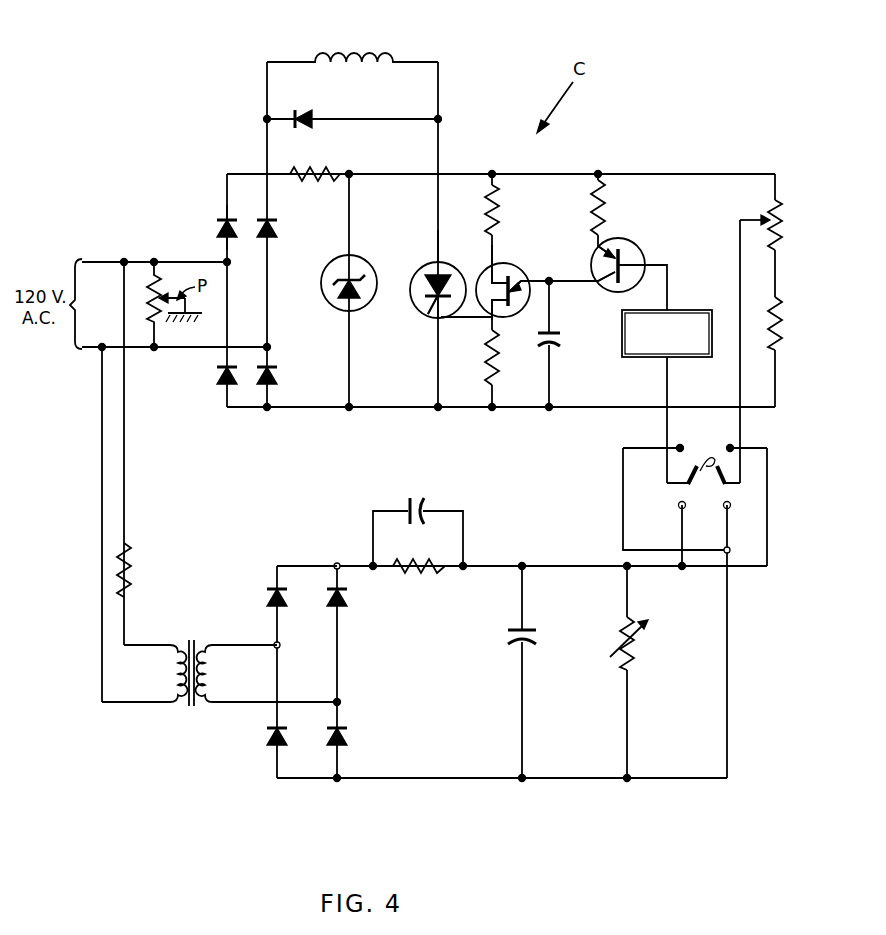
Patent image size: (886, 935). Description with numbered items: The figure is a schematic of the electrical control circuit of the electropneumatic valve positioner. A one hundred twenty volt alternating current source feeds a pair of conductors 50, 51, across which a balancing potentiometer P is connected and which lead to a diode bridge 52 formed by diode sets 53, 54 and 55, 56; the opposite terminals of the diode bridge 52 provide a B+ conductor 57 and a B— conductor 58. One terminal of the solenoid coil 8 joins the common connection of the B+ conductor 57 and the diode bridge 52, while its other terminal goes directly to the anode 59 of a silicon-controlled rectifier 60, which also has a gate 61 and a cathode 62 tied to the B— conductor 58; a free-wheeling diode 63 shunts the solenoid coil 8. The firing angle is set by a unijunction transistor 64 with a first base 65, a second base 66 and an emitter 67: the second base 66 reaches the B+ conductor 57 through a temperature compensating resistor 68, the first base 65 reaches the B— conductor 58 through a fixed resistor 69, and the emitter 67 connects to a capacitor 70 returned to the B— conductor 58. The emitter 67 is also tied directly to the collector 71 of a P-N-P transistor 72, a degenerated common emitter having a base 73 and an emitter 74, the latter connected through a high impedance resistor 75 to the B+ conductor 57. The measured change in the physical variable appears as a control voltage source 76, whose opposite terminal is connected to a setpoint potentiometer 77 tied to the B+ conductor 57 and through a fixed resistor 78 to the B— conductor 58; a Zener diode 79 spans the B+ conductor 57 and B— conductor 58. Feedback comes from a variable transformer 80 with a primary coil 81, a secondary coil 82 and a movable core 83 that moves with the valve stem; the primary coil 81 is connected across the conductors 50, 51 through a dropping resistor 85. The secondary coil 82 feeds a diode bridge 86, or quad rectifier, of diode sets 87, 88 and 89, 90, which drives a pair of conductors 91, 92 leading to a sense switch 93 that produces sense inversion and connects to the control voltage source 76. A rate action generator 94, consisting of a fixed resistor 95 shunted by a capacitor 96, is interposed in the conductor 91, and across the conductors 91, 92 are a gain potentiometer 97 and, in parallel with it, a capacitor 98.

The solenoid coil 8 is at (372, 56).
The positive conductor 50 is at (176, 262).
The neutral conductor 51 is at (176, 347).
The diode bridge 52 is at (218, 212).
The diode 53 is at (218, 228).
The diode 54 is at (270, 378).
The diode 55 is at (271, 236).
The diode 56 is at (217, 374).
The B+ conductor 57 is at (688, 174).
The B— conductor 58 is at (604, 410).
The anode 59 is at (430, 280).
The silicon-controlled rectifier 60 is at (407, 288).
The gate 61 is at (441, 312).
The cathode 62 is at (428, 311).
The free-wheeling diode 63 is at (314, 117).
The unijunction transistor 64 is at (522, 263).
The base-1 65 is at (498, 312).
The base-2 66 is at (500, 281).
The emitter 67 is at (516, 284).
The temperature compensating resistor 68 is at (486, 222).
The fixed resistor 69 is at (486, 362).
The capacitor 70 is at (559, 346).
The collector 71 is at (610, 286).
The P-N-P transistor 72 is at (642, 245).
The base 73 is at (634, 272).
The emitter 74 is at (609, 256).
The high impedance resistor 75 is at (594, 205).
The control voltage source 76 is at (678, 310).
The setpoint potentiometer 77 is at (782, 233).
The fixed resistor 78 is at (782, 318).
The Zener diode 79 is at (345, 276).
The variable transformer 80 is at (219, 682).
The primary coil 81 is at (172, 673).
The secondary coil 82 is at (210, 679).
The movable core 83 is at (191, 710).
The dropping resistor 85 is at (136, 562).
The diode bridge 86 is at (268, 570).
The diode 87 is at (268, 606).
The diode 88 is at (343, 745).
The diode 89 is at (343, 606).
The diode 90 is at (266, 752).
The conductor 91 is at (545, 551).
The conductor 92 is at (458, 780).
The sense switch 93 is at (760, 443).
The rate action generator 94 is at (439, 541).
The fixed resistor 95 is at (418, 572).
The capacitor 96 is at (425, 507).
The gain potentiometer 97 is at (642, 650).
The capacitor 98 is at (540, 635).